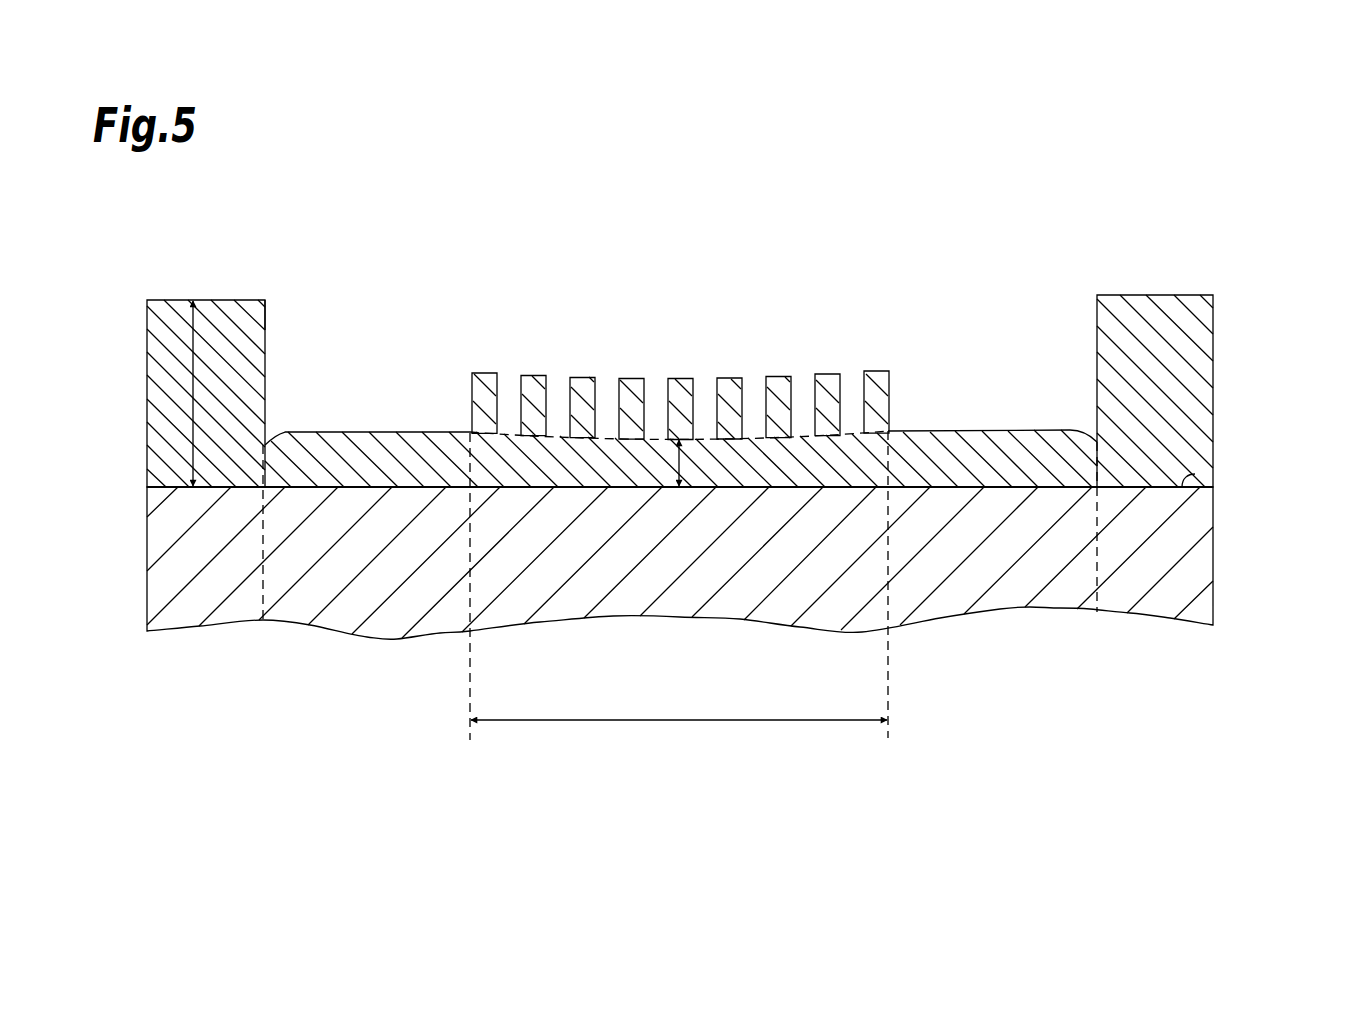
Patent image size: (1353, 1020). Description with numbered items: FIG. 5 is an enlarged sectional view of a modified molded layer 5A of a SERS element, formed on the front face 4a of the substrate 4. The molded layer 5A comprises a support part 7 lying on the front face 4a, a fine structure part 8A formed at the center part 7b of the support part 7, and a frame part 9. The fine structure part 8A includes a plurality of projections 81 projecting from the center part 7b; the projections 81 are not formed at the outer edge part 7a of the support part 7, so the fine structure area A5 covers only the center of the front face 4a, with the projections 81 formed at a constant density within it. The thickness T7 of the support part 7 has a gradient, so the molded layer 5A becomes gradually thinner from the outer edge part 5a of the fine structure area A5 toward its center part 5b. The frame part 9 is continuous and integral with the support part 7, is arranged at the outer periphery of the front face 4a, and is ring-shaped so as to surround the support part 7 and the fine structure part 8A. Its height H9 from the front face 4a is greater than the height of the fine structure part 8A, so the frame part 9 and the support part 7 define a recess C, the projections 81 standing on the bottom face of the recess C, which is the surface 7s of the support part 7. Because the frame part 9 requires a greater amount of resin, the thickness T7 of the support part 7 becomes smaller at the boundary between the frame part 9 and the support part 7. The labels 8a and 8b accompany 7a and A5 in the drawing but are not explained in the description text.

The substrate 4 is at (1213, 549).
The front face of the substrate 4a is at (1195, 474).
The molded layer 5A is at (698, 504).
The frame part 9 is at (167, 370).
The height of the frame part H9 is at (193, 405).
The recess C is at (265, 322).
The support part 7 is at (1075, 453).
The surface of the support part 7s is at (607, 437).
The outer edge part of the support part 7a is at (335, 504).
The bottom surface of electrode layer 8a is at (1023, 504).
The center part of the support part 7b is at (679, 589).
The center part of the fine structure area 5b is at (703, 504).
The thickness of the support part T7 is at (679, 462).
The outer edge part of the fine structure area 5a is at (492, 504).
The fine structure area A5 is at (679, 737).
The width of electrode fin region 8b is at (679, 737).
The fine structure part 8A is at (872, 376).
The projections 81 is at (587, 398).